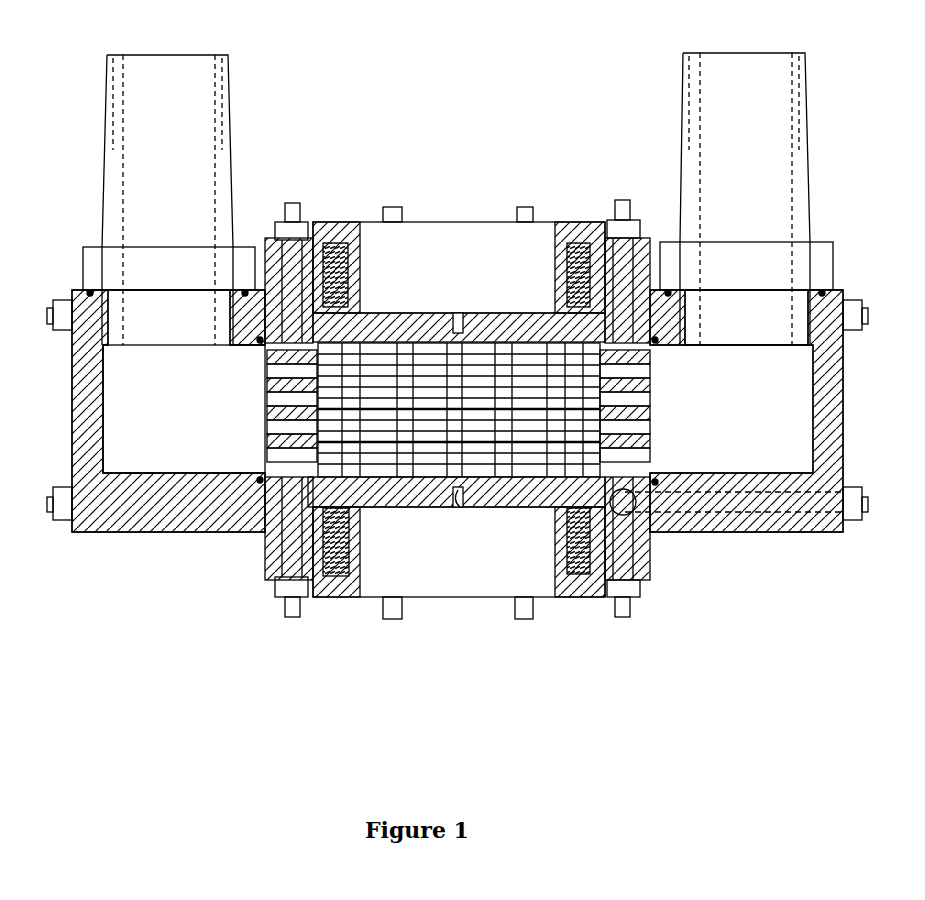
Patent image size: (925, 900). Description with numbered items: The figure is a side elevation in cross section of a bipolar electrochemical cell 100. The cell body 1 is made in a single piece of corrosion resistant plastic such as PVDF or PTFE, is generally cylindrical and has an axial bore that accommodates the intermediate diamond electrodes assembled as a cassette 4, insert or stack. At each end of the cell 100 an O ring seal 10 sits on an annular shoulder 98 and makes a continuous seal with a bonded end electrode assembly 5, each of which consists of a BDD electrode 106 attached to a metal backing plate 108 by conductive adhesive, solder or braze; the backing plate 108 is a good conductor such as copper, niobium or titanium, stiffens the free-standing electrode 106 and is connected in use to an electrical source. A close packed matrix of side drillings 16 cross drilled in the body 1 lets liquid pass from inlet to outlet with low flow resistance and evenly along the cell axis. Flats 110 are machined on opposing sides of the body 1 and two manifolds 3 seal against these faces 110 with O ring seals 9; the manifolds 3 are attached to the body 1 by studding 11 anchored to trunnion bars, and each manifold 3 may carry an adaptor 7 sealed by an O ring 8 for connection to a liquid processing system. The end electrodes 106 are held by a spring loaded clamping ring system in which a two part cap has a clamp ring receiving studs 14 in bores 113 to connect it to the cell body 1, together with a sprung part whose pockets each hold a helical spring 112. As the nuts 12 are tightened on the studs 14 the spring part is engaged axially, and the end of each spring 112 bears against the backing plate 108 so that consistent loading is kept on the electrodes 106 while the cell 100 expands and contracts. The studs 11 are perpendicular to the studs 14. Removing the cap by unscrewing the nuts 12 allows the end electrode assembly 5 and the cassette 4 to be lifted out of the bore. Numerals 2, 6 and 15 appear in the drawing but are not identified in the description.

The cell body 1 is at (323, 262).
The pressing block 2 is at (560, 225).
The manifold 3 is at (103, 536).
The cassette 4 is at (655, 330).
The bonded end electrode assembly 5 is at (432, 508).
The upper clamping bar 6 is at (290, 252).
The adaptor 7 is at (234, 100).
The O ring 8 is at (88, 290).
The O ring seal 9 is at (258, 352).
The O ring seal 10 is at (318, 340).
The studding 11 is at (657, 520).
The nut 12 is at (640, 590).
The stud 14 is at (618, 200).
The tab 15 is at (516, 212).
The side drillings 16 is at (266, 405).
The annular shoulder 98 is at (345, 335).
The bipolar electrochemical cell 100 is at (266, 562).
The BDD electrode 106 is at (428, 342).
The metal backing plate 108 is at (556, 305).
The flats 110 is at (266, 449).
The helical spring 112 is at (336, 245).
The bore 113 is at (265, 268).